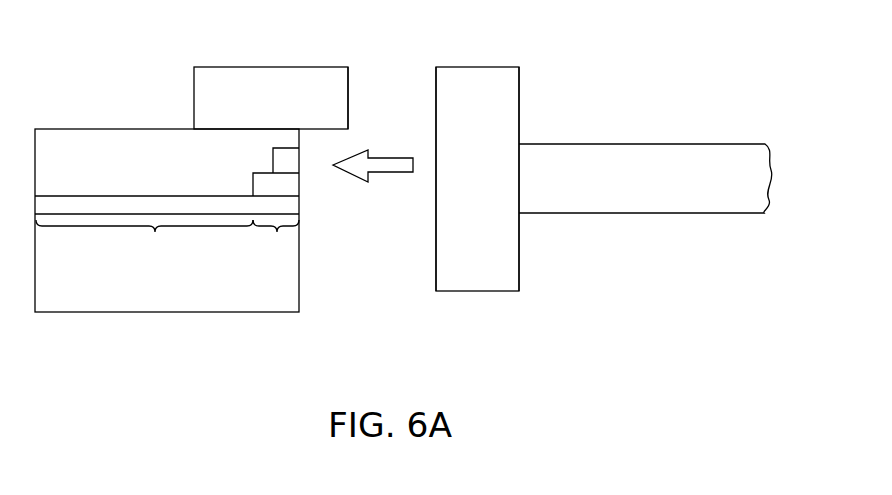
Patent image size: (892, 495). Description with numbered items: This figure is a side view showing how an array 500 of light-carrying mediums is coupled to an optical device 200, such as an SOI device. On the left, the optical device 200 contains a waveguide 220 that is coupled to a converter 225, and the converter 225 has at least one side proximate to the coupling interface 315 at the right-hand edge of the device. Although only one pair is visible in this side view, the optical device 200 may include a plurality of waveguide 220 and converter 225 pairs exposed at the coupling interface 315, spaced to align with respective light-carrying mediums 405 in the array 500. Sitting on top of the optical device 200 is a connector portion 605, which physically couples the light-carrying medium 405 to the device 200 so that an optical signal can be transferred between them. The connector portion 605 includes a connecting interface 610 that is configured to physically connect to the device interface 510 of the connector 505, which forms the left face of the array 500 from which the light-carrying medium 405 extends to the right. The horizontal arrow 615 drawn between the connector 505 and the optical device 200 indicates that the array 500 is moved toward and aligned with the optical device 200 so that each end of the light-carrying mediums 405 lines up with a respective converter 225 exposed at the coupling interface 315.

The optical device 200 is at (155, 312).
The waveguide 220 is at (144, 243).
The converter 225 is at (276, 243).
The coupling interface 315 is at (308, 190).
The light-carrying medium 405 is at (675, 144).
The array 500 is at (576, 240).
The connector 505 is at (519, 90).
The device interface 510 is at (426, 141).
The connector portion 605 is at (194, 90).
The connecting interface 610 is at (359, 88).
The direction arrow 615 is at (395, 172).